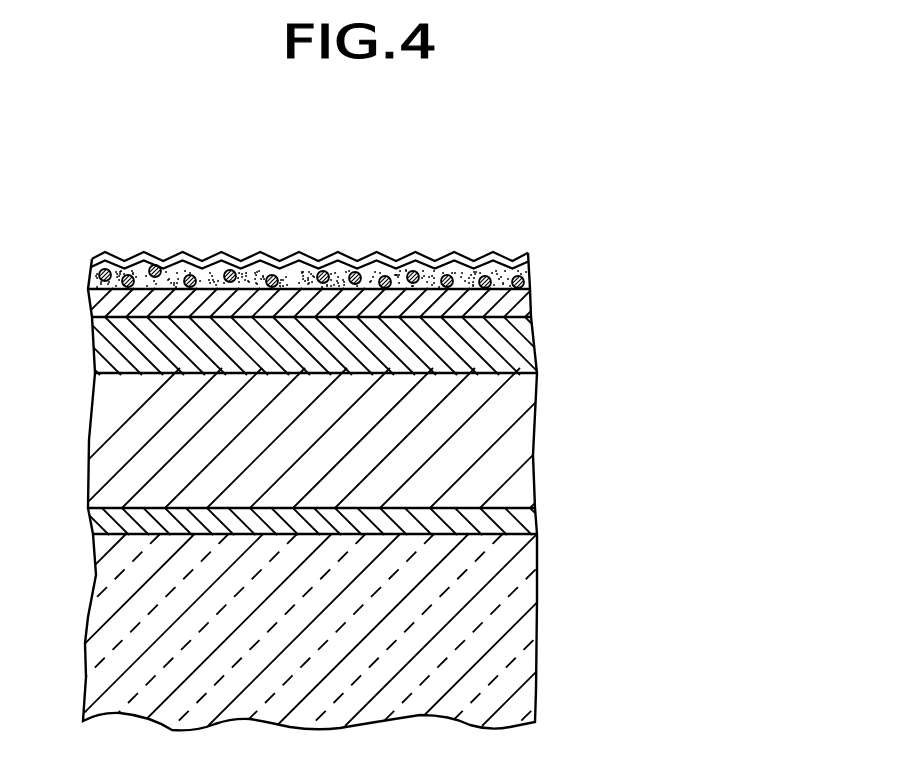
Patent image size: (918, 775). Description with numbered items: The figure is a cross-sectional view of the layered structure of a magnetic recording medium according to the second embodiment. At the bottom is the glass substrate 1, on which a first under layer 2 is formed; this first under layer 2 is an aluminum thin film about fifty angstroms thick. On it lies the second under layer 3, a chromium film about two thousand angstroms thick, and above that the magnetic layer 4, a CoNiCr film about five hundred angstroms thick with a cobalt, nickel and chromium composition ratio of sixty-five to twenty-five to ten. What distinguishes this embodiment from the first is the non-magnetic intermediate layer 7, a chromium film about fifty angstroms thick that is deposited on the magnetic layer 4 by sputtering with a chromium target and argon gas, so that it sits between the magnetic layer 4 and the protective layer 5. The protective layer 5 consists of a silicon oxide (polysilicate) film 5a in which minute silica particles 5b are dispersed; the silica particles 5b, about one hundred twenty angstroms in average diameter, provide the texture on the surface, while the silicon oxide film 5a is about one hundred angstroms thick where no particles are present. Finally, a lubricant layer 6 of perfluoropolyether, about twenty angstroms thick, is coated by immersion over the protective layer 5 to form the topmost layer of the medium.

The glass substrate 1 is at (520, 641).
The first under layer 2 is at (520, 528).
The second under layer 3 is at (520, 458).
The magnetic layer 4 is at (526, 360).
The protective layer 5 is at (421, 195).
The silicon oxide film 5a is at (115, 263).
The minute silica particles 5b is at (307, 220).
The lubricant layer 6 is at (354, 262).
The non-magnetic intermediate layer 7 is at (433, 282).